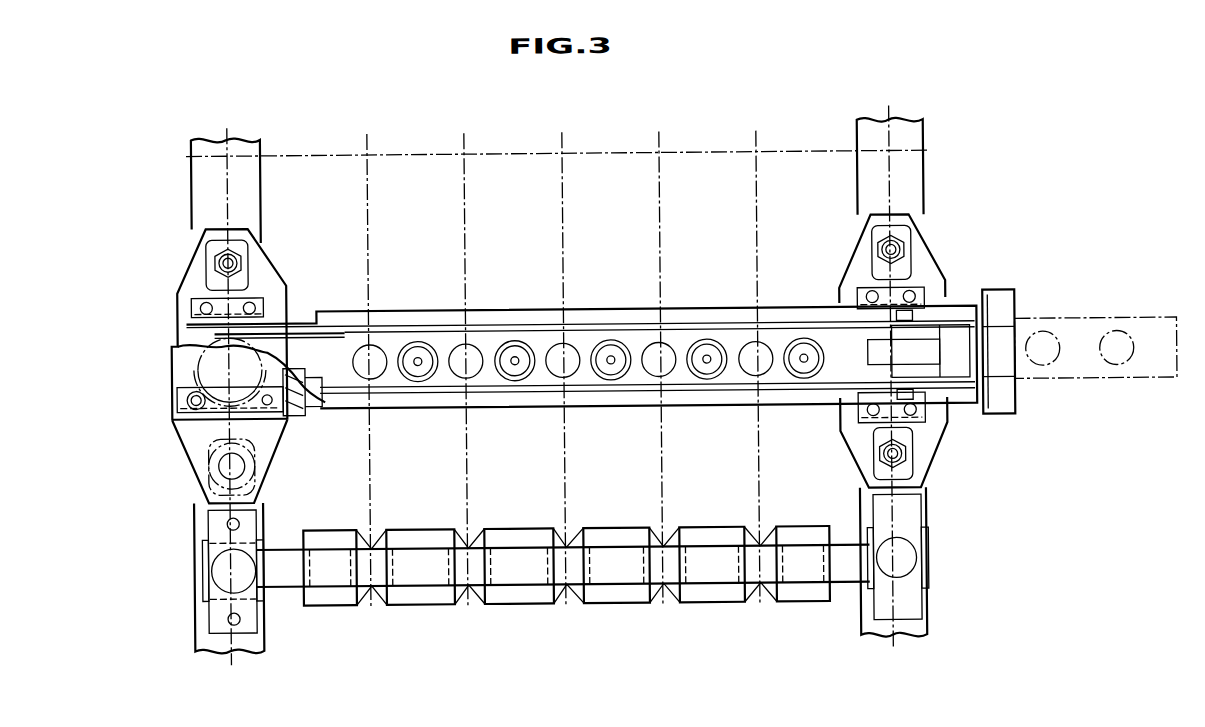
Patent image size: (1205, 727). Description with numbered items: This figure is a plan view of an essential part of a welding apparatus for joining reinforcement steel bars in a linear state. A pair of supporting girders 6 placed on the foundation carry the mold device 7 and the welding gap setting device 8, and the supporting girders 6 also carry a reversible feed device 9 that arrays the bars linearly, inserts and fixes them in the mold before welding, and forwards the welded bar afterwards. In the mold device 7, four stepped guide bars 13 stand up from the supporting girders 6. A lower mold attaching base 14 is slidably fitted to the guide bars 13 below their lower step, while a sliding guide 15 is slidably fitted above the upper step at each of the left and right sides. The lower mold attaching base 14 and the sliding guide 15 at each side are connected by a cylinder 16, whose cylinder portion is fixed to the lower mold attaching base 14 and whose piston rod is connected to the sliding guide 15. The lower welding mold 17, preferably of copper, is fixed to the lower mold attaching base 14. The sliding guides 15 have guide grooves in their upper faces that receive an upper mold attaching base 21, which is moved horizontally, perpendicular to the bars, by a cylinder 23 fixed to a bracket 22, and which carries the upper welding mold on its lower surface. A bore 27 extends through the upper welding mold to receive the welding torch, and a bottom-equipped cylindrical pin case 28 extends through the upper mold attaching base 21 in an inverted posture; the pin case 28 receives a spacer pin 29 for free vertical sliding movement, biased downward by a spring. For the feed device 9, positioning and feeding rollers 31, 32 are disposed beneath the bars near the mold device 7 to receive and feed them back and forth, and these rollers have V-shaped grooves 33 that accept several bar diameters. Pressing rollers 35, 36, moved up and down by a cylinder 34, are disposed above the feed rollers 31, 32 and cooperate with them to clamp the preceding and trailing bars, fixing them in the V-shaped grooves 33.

The supporting girders 6 is at (207, 217).
The mold device 7 is at (586, 318).
The welding gap setting device 8 is at (588, 350).
The reversible feed device 9 is at (563, 527).
The stepped guide bars 13 is at (225, 258).
The lower mold attaching base 14 is at (180, 300).
The sliding guide 15 is at (213, 278).
The cylinder 16 is at (200, 367).
The lower welding mold 17 is at (320, 400).
The upper mold attaching base 21 is at (340, 332).
The bracket 22 is at (1010, 393).
The cylinder 23 is at (1105, 375).
The bore 27 is at (375, 348).
The pin case 28 is at (430, 378).
The spacer pin 29 is at (419, 365).
The positioning and feeding roller 31 is at (517, 537).
The positioning and feeding roller 32 is at (557, 120).
The V-shaped grooves 33 is at (575, 540).
The cylinder 34 is at (219, 565).
The pressing roller 35 is at (619, 553).
The pressing roller 36 is at (583, 153).